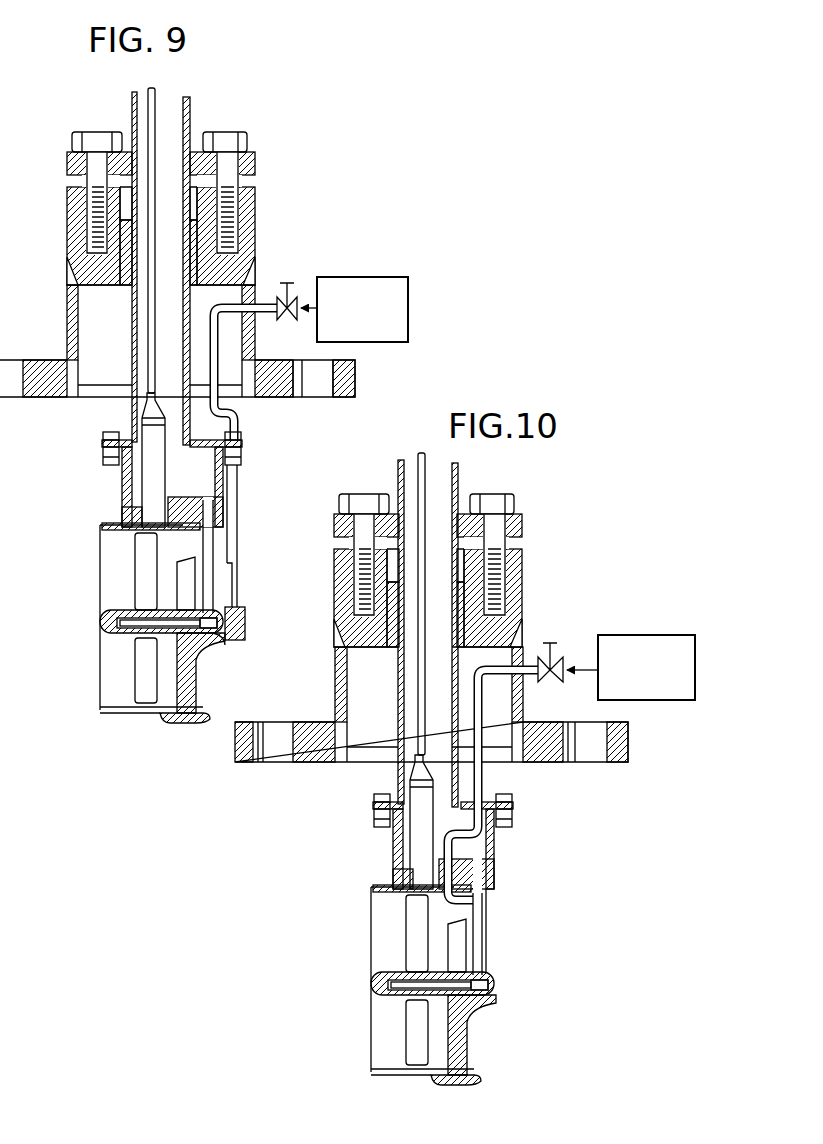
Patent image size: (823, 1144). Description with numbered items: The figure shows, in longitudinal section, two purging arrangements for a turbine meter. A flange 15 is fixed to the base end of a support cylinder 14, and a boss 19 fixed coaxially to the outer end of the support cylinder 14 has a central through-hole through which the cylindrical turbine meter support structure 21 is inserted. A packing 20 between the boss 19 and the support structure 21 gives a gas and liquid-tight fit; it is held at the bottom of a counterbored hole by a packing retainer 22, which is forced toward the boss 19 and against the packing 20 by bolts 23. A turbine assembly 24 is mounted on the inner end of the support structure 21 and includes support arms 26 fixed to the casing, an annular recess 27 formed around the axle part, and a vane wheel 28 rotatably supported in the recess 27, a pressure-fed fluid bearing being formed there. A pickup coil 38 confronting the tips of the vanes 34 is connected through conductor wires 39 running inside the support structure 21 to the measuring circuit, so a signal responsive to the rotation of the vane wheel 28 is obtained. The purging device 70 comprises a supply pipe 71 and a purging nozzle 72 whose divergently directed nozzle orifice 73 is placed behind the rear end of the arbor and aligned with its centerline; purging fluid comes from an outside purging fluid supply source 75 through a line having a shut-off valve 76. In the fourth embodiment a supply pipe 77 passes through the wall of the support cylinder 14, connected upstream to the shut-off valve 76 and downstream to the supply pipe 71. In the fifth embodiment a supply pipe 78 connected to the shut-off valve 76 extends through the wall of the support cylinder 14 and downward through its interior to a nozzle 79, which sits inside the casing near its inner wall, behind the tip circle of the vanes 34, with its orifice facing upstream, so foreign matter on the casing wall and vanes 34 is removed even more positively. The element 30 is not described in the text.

In FIG. 9, the support cylinder 14 is at (67, 313).
In FIG. 10, the support cylinder 14 is at (335, 677).
In FIG. 9, the flange 15 is at (33, 397).
In FIG. 10, the flange 15 is at (628, 735).
In FIG. 9, the boss 19 is at (255, 203).
In FIG. 10, the boss 19 is at (523, 568).
In FIG. 9, the packing 20 is at (104, 285).
In FIG. 10, the packing 20 is at (372, 647).
In FIG. 9, the turbine meter support structure 21 is at (132, 108).
In FIG. 10, the turbine meter support structure 21 is at (398, 476).
In FIG. 9, the packing retainer 22 is at (255, 162).
In FIG. 10, the packing retainer 22 is at (523, 526).
In FIG. 9, the bolts 23 is at (232, 132).
In FIG. 10, the bolts 23 is at (495, 495).
In FIG. 9, the turbine assembly 24 is at (129, 711).
In FIG. 10, the turbine assembly 24 is at (415, 1076).
In FIG. 9, the support arms 26 is at (190, 658).
In FIG. 10, the support arms 26 is at (467, 1020).
In FIG. 9, the annular recess 27 is at (127, 600).
In FIG. 10, the annular recess 27 is at (398, 960).
In FIG. 9, the vane wheel 28 is at (128, 660).
In FIG. 10, the vane wheel 28 is at (400, 1020).
In FIG. 9, the electrode housing 30 is at (214, 548).
In FIG. 10, the electrode housing 30 is at (486, 945).
In FIG. 9, the vanes 34 is at (136, 570).
In FIG. 10, the vanes 34 is at (407, 920).
In FIG. 9, the pickup coil 38 is at (145, 478).
In FIG. 10, the pickup coil 38 is at (417, 838).
In FIG. 9, the conductor wires 39 is at (152, 88).
In FIG. 10, the conductor wires 39 is at (422, 453).
In FIG. 9, the purging device 70 is at (244, 601).
In FIG. 9, the supply pipe 71 is at (238, 494).
In FIG. 9, the purging nozzle 72 is at (245, 620).
In FIG. 9, the nozzle orifice 73 is at (217, 635).
In FIG. 9, the purging fluid supply source 75 is at (368, 277).
In FIG. 10, the purging fluid supply source 75 is at (645, 635).
In FIG. 9, the shut-off valve 76 is at (286, 283).
In FIG. 10, the shut-off valve 76 is at (551, 643).
In FIG. 9, the supply pipe 77 is at (218, 345).
In FIG. 10, the supply pipe 78 is at (470, 690).
In FIG. 10, the nozzle 79 is at (479, 900).